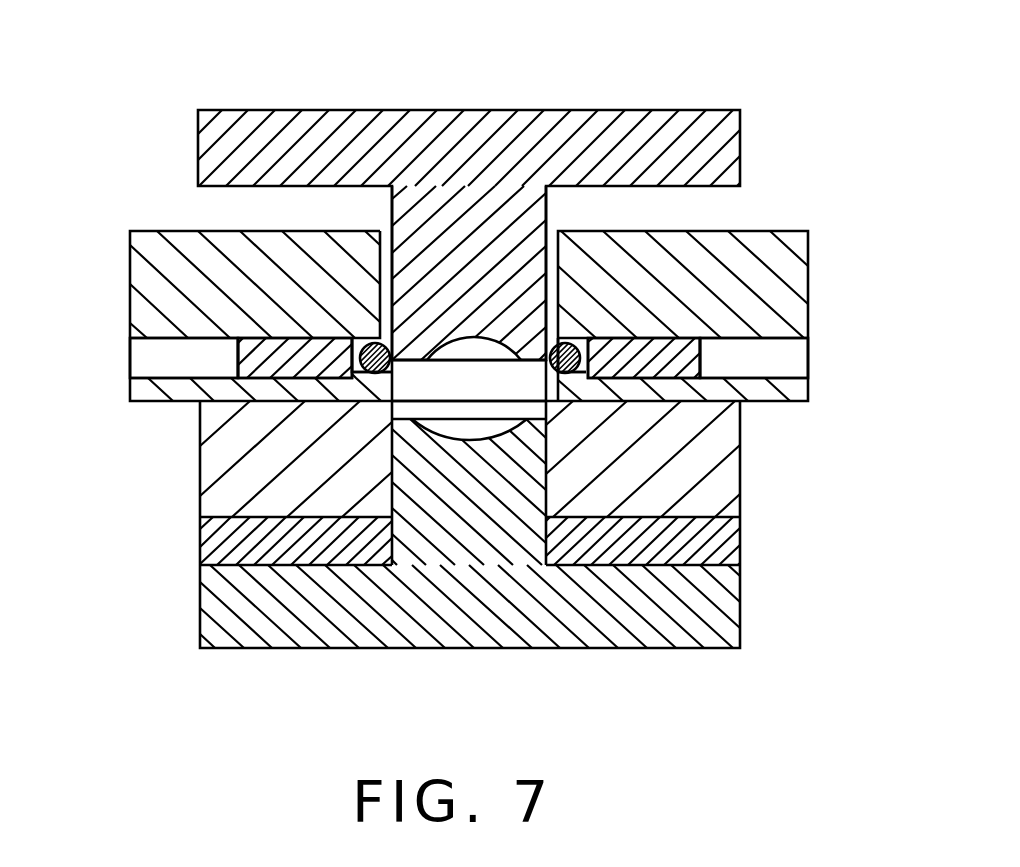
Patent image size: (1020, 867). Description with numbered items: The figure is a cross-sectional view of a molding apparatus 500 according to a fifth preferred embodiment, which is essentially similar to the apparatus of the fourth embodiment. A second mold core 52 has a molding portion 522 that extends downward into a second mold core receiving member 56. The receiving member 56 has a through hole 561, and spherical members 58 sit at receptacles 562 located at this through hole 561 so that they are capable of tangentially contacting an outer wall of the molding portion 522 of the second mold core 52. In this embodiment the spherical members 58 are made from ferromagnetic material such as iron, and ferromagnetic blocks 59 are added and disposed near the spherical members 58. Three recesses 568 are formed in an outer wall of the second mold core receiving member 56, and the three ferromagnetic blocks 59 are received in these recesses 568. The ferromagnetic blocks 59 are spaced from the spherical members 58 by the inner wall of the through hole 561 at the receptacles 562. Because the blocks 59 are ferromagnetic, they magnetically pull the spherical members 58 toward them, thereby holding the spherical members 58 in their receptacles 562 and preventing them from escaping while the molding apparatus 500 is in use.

The molding apparatus 500 is at (482, 31).
The second mold core 52 is at (717, 135).
The molding portion 522 is at (520, 243).
The second mold core receiving member 56 is at (767, 253).
The through hole 561 is at (455, 380).
The receptacles 562 is at (560, 338).
The ferromagnetic blocks 59 is at (677, 355).
The recesses 568 is at (757, 360).
The spherical members 58 is at (572, 372).